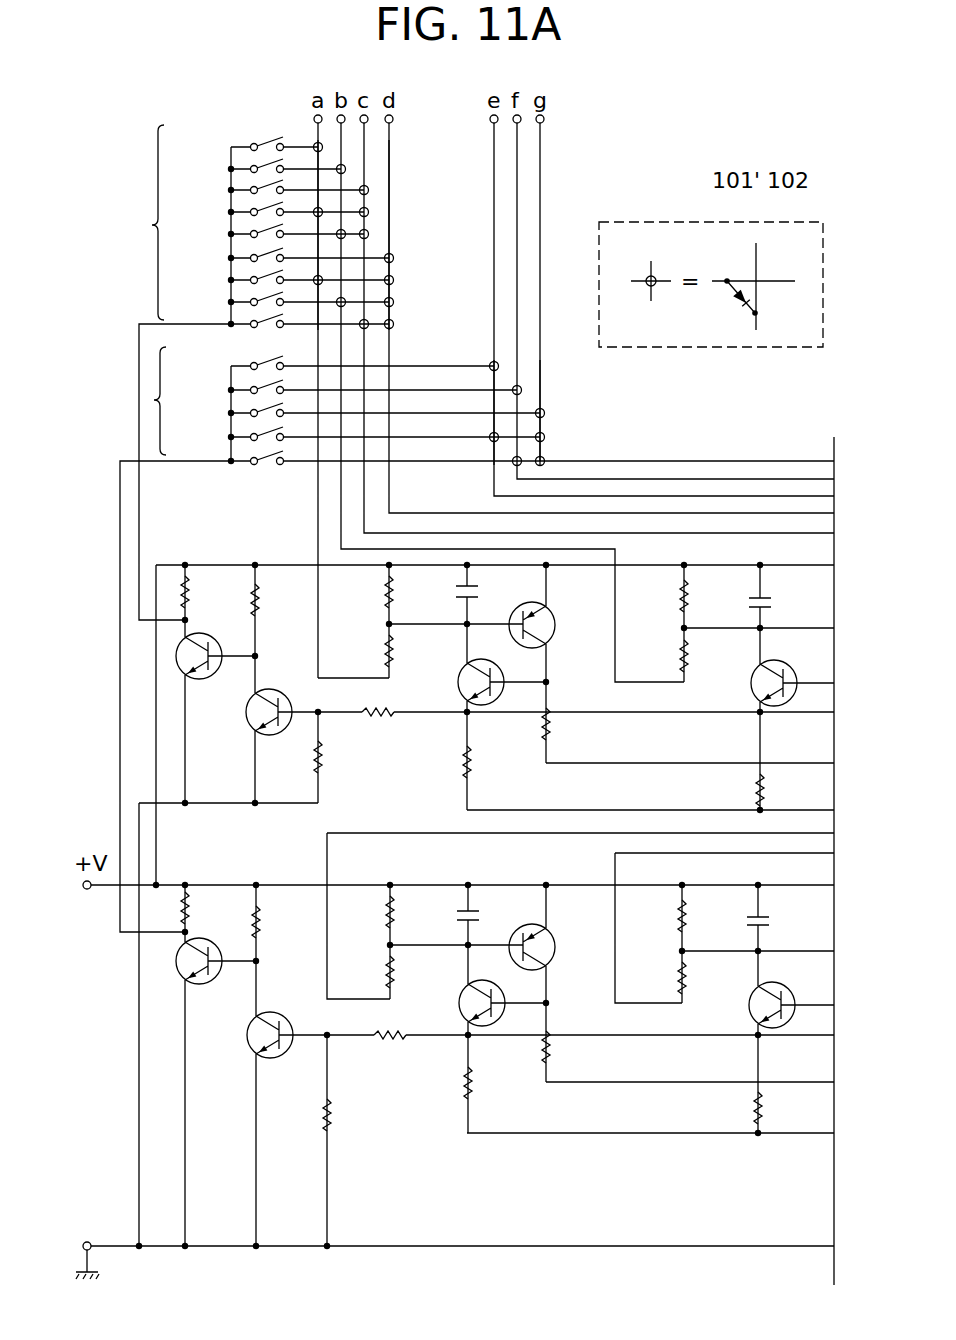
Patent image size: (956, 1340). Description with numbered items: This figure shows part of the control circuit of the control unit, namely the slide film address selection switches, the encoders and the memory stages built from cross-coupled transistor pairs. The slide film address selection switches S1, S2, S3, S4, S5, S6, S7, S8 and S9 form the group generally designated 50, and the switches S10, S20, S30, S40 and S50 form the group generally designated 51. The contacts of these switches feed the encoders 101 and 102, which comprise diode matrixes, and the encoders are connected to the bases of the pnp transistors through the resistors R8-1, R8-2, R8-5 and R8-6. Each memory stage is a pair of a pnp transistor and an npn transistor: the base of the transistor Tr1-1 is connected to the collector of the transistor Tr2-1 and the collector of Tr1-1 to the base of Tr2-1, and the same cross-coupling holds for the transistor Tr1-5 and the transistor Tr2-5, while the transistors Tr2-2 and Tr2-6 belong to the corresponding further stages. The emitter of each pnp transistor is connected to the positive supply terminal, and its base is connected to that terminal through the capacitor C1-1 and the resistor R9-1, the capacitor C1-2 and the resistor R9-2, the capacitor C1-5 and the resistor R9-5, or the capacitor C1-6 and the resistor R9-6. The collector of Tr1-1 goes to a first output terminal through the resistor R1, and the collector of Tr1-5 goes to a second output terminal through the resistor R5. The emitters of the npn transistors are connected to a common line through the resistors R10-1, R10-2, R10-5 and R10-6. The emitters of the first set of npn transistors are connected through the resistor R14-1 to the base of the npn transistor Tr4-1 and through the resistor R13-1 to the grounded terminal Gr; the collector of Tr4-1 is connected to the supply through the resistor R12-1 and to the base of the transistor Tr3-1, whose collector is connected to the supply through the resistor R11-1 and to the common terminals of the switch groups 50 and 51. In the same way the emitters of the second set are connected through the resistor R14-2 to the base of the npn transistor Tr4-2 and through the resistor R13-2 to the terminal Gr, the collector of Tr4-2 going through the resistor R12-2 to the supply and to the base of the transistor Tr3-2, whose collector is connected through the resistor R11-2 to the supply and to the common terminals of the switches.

The slide film address selection switches S1–S9 50 is at (138, 240).
The slide film address selection switches S10–S50 51 is at (118, 415).
The encoder 101 is at (438, 228).
The encoder 102 is at (607, 405).
The slide film address selection switch S1 is at (250, 147).
The slide film address selection switch S2 is at (261, 169).
The slide film address selection switch S3 is at (273, 190).
The slide film address selection switch S4 is at (273, 212).
The slide film address selection switch S5 is at (273, 234).
The slide film address selection switch S6 is at (285, 258).
The slide film address selection switch S7 is at (285, 280).
The slide film address selection switch S8 is at (285, 302).
The slide film address selection switch S9 is at (285, 324).
The slide film address selection switch S10 is at (336, 366).
The slide film address selection switch S20 is at (347, 390).
The slide film address selection switch S30 is at (359, 413).
The slide film address selection switch S40 is at (359, 437).
The slide film address selection switch S50 is at (503, 461).
The resistor R11-1 is at (213, 592).
The resistor R12-1 is at (283, 610).
The resistor R13-1 is at (348, 757).
The resistor R14-1 is at (383, 727).
The resistor R9-1 is at (362, 594).
The resistor R8-1 is at (362, 651).
The resistor R10-1 is at (497, 761).
The resistor R1 is at (561, 722).
The resistor R9-2 is at (656, 596).
The resistor R8-2 is at (656, 655).
The resistor R10-2 is at (728, 762).
The capacitor C1-1 is at (445, 594).
The capacitor C1-2 is at (741, 596).
The capacitor C1-5 is at (489, 915).
The capacitor C1-6 is at (778, 918).
The pnp transistor Tr1-1 is at (555, 623).
The npn transistor Tr2-1 is at (468, 669).
The transistor Tr3-1 is at (215, 711).
The npn transistor Tr4-1 is at (262, 729).
The npn transistor Tr2-2 is at (763, 671).
The resistor R11-2 is at (213, 908).
The resistor R12-2 is at (284, 921).
The resistor R13-2 is at (356, 1140).
The resistor R14-2 is at (390, 1049).
The resistor R9-5 is at (413, 915).
The resistor R8-5 is at (413, 972).
The resistor R10-5 is at (497, 1084).
The resistor R5 is at (561, 1042).
The resistor R9-6 is at (705, 918).
The resistor R8-6 is at (706, 977).
The resistor R10-6 is at (726, 1085).
The pnp transistor Tr1-5 is at (556, 944).
The npn transistor Tr2-5 is at (472, 991).
The transistor Tr3-2 is at (217, 1089).
The npn transistor Tr4-2 is at (265, 1103).
The npn transistor Tr2-6 is at (761, 994).
The grounded terminal Gr is at (88, 1248).